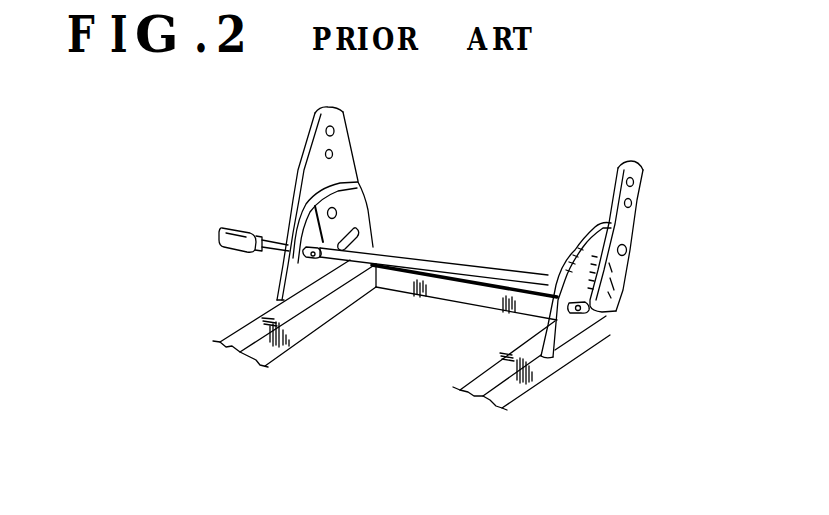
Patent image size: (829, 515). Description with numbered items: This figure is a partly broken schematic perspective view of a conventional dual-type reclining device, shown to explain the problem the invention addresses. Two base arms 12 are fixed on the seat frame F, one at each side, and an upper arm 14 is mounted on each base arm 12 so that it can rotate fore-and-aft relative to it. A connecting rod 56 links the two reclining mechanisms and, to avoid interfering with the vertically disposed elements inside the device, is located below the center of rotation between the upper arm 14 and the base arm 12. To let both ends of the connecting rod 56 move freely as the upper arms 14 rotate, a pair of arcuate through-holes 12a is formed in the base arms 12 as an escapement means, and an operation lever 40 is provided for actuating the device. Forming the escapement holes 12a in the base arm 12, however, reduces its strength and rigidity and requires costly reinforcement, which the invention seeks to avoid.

The upper arm 14 is at (300, 145).
The base arm 12 is at (356, 198).
The arcuate through-hole 12a is at (318, 260).
The operation lever 40 is at (232, 249).
The connecting rod 56 is at (398, 260).
The seat frame F is at (468, 261).